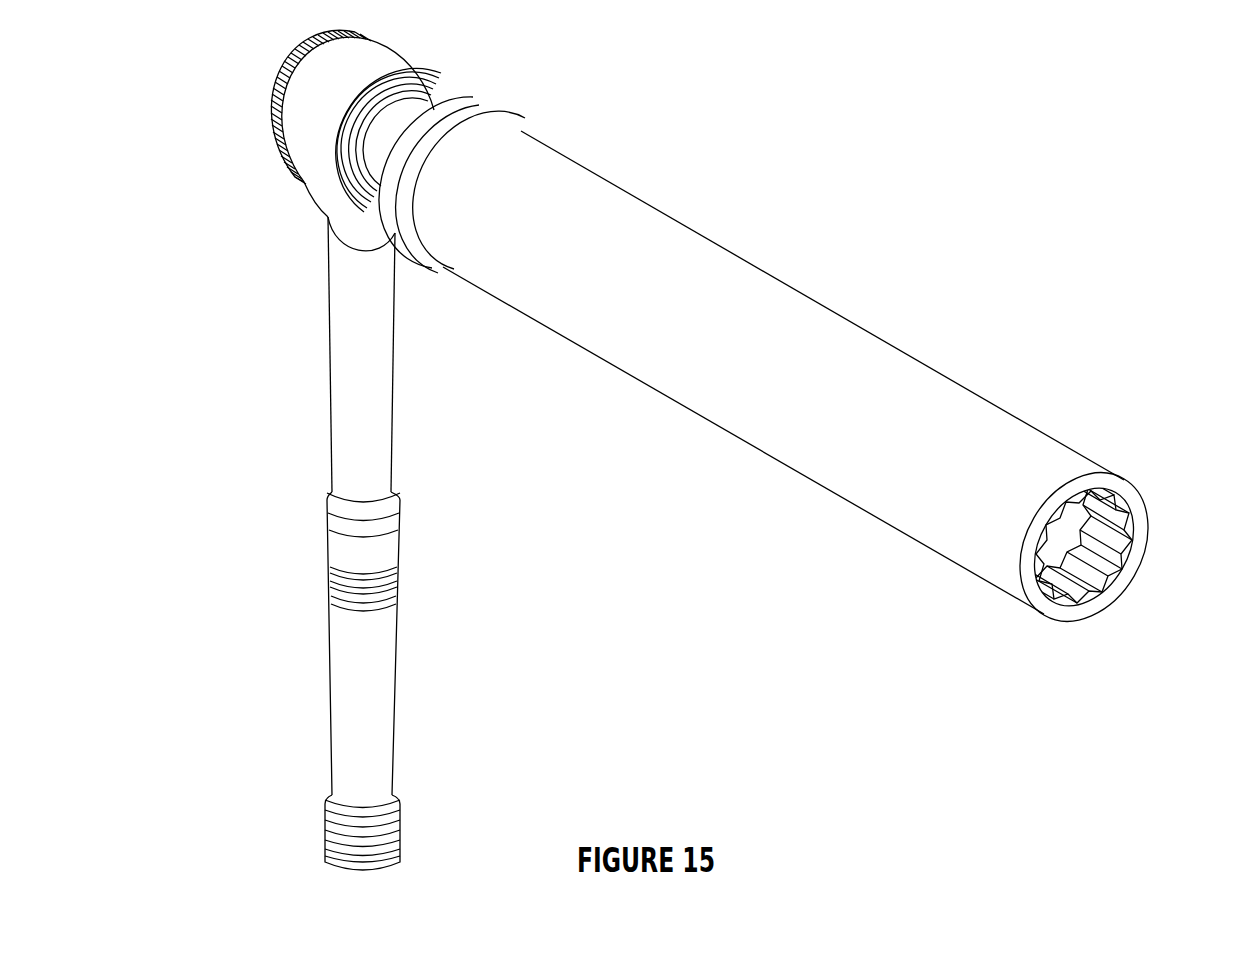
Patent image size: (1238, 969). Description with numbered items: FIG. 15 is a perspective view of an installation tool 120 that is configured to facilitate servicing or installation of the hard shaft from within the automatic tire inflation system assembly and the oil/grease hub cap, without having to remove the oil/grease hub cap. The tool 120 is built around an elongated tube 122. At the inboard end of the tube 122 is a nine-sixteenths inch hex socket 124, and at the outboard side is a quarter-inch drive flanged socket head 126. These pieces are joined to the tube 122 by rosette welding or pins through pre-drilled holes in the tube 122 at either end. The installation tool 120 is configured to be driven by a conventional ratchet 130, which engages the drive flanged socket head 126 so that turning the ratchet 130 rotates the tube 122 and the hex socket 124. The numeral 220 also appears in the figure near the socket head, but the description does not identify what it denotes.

The installation tool 120 is at (796, 341).
The elongated tube 122 is at (883, 340).
The hex socket 124 is at (1135, 487).
The drive flanged socket head 126 is at (446, 97).
The ratchet 130 is at (330, 300).
The tube end junction 220 is at (436, 270).